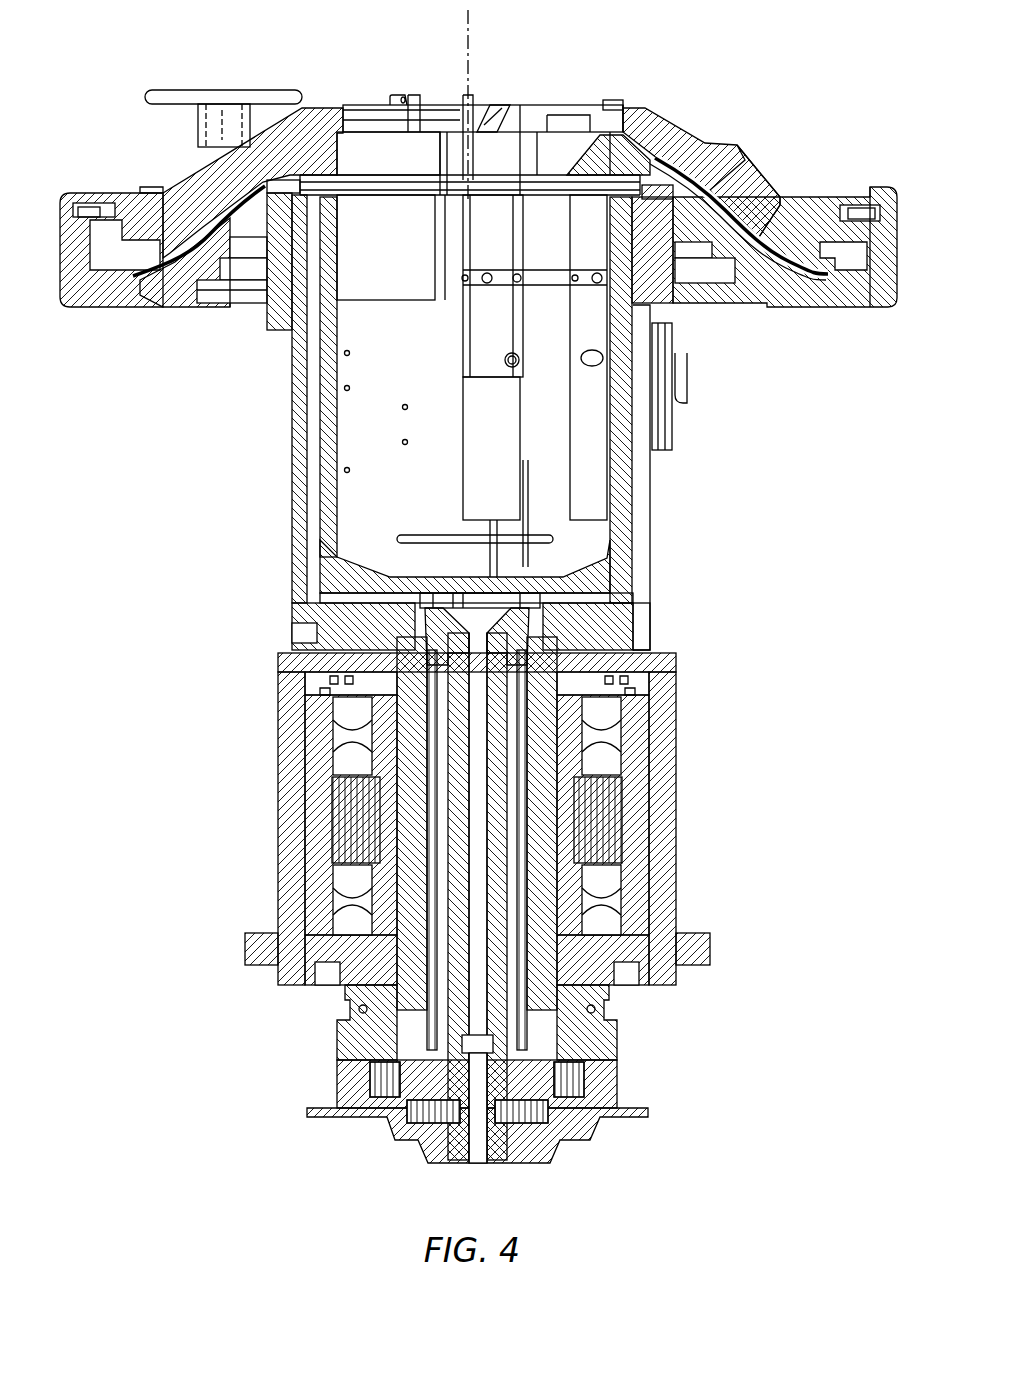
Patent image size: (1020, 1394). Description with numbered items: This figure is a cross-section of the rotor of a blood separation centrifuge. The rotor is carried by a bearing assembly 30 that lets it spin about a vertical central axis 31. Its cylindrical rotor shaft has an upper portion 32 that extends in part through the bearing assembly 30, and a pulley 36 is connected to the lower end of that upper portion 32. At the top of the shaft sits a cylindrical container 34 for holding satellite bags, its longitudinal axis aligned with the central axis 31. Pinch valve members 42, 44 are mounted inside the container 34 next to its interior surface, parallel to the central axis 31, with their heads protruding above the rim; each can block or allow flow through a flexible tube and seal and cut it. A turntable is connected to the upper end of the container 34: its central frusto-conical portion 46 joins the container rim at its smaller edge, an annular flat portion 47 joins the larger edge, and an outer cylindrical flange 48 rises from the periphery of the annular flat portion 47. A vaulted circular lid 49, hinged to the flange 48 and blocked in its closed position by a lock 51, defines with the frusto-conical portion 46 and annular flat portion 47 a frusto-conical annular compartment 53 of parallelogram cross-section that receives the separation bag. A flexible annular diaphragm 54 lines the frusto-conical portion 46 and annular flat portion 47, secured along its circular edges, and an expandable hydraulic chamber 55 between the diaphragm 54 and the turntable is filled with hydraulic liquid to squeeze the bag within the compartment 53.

The bearing assembly 30 is at (667, 700).
The central axis 31 is at (467, 62).
The upper portion of the rotor shaft 32 is at (500, 997).
The cylindrical container 34 is at (625, 519).
The pulley 36 is at (353, 1040).
The first pinch valve member 42 is at (617, 100).
The third pinch valve member 44 is at (512, 110).
The frusto-conical portion 46 is at (733, 168).
The annular flat portion 47 is at (815, 292).
The outer cylindrical flange 48 is at (897, 248).
The vaulted circular lid 49 is at (668, 128).
The lock 51 is at (210, 120).
The frusto-conical annular compartment 53 is at (753, 223).
The flexible annular diaphragm 54 is at (213, 207).
The expandable hydraulic chamber 55 is at (170, 262).